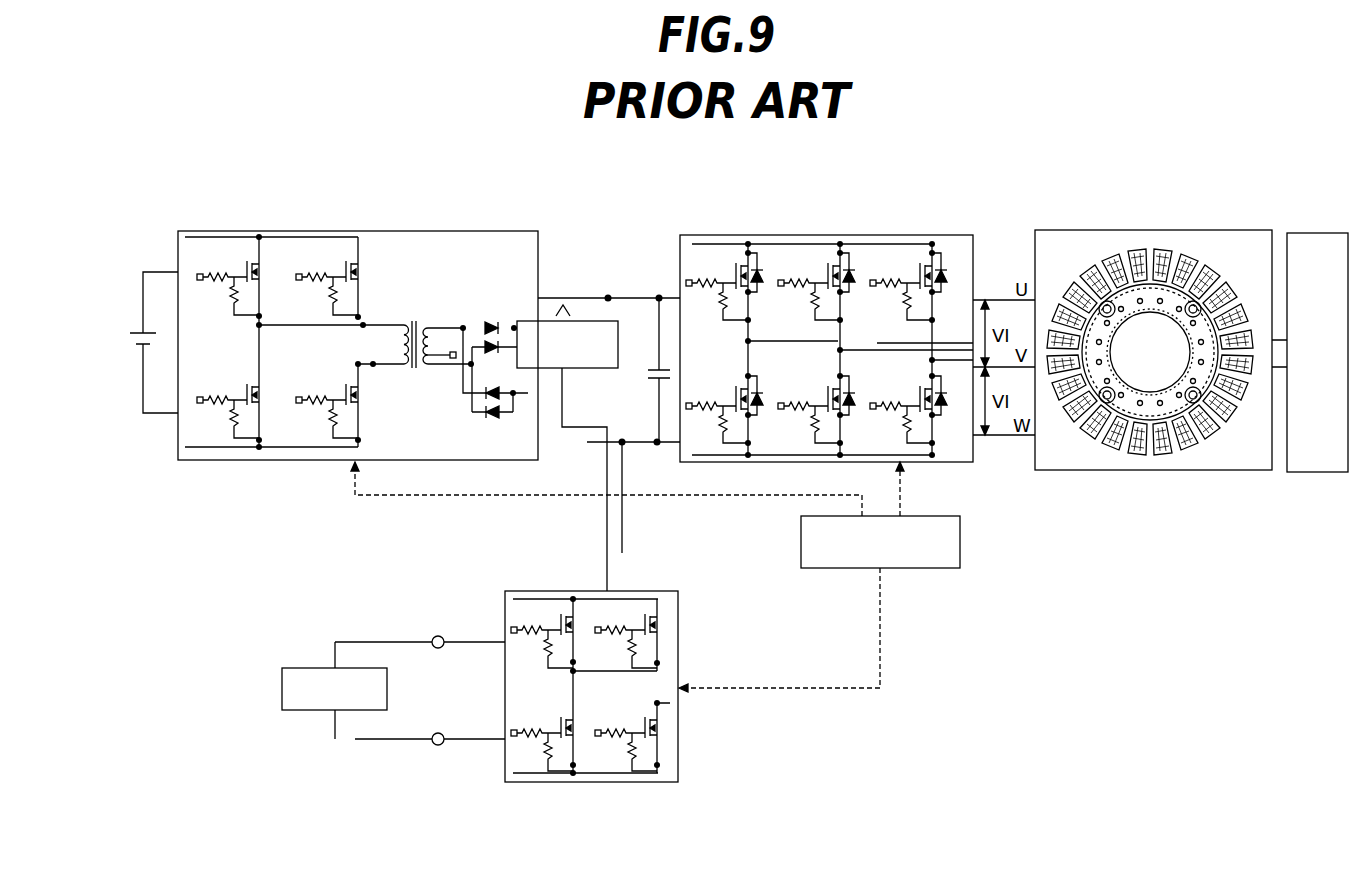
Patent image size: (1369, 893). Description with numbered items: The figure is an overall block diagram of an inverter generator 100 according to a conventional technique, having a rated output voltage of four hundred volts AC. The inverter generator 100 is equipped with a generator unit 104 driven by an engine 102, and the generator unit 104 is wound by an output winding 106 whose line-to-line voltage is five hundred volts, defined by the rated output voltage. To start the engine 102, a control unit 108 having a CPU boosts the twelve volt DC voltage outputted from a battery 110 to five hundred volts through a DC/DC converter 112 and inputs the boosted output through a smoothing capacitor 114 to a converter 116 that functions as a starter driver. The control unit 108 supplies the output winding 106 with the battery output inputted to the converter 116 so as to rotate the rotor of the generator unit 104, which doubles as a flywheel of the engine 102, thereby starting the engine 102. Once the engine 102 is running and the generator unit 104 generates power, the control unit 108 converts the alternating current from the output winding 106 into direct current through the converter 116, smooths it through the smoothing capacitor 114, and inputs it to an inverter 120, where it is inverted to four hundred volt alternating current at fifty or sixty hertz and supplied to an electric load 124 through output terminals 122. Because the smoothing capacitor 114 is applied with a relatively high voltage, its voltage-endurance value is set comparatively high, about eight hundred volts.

The inverter generator 100 is at (1026, 208).
The engine 102 is at (1316, 233).
The generator unit 104 is at (1216, 230).
The output winding 106 is at (1158, 252).
The control unit 108 is at (960, 525).
The battery 110 is at (134, 330).
The DC/DC converter 112 is at (430, 231).
The smoothing capacitor 114 is at (645, 369).
The converter 116 is at (893, 235).
The inverter 120 is at (662, 591).
The output terminals 122 is at (439, 636).
The electric load 124 is at (297, 668).